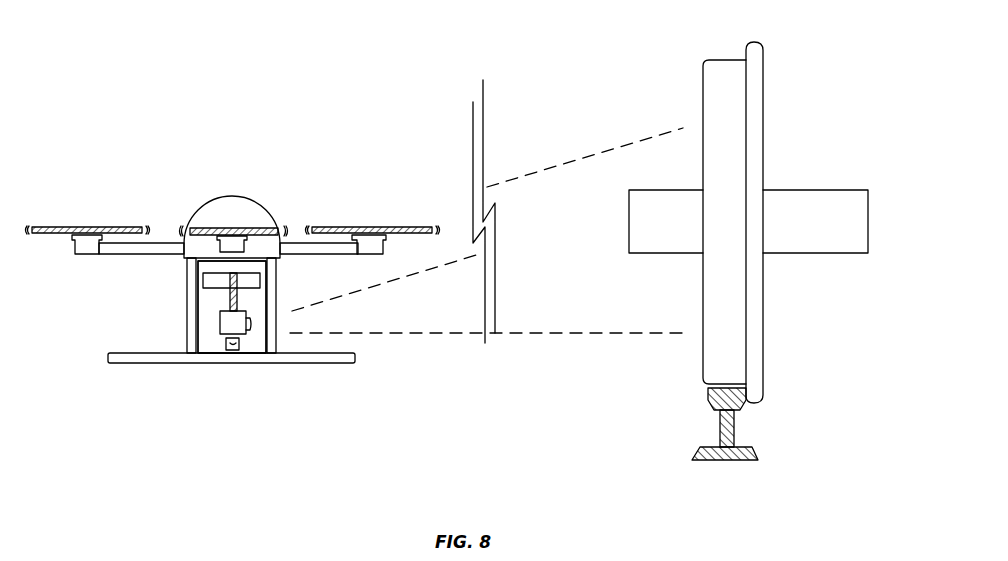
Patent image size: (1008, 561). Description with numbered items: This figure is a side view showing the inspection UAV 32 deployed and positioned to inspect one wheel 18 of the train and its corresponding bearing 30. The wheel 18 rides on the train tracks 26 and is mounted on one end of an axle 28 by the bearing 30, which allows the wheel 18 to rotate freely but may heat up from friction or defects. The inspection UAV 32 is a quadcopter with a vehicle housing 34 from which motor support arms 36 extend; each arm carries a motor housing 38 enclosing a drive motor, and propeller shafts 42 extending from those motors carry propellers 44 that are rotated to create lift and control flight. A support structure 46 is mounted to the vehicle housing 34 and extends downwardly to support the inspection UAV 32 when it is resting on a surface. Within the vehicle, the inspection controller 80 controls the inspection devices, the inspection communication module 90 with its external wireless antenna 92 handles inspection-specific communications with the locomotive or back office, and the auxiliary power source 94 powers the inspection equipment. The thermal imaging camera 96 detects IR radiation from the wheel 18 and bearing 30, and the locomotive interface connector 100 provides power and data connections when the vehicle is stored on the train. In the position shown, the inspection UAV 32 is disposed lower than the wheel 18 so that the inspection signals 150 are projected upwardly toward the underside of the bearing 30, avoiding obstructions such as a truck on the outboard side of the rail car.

The wheel 18 is at (757, 58).
The train tracks 26 is at (717, 433).
The axle 28 is at (810, 252).
The bearing 30 is at (655, 250).
The inspection UAV 32 is at (180, 145).
The vehicle housing 34 is at (249, 198).
The motor support arm 36 is at (118, 254).
The motor housing 38 is at (72, 246).
The propeller shaft 42 is at (86, 232).
The propeller 44 is at (55, 228).
The support structure 46 is at (135, 363).
The inspection controller 80 is at (262, 285).
The inspection communication module 90 is at (232, 307).
The external wireless antenna 92 is at (230, 297).
The auxiliary power source 94 is at (205, 268).
The thermal imaging camera 96 is at (224, 334).
The locomotive interface connector 100 is at (233, 350).
The inspection signals 150 is at (405, 336).